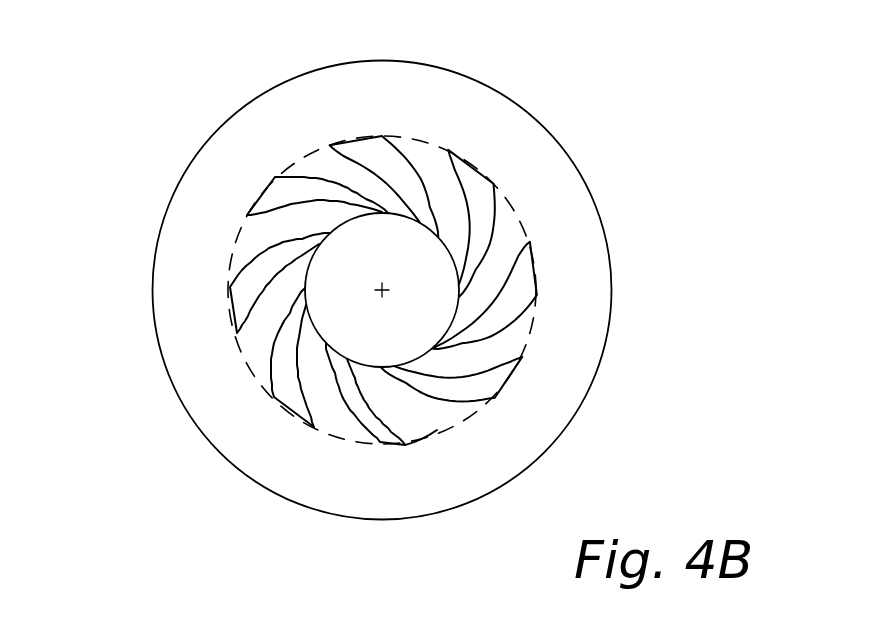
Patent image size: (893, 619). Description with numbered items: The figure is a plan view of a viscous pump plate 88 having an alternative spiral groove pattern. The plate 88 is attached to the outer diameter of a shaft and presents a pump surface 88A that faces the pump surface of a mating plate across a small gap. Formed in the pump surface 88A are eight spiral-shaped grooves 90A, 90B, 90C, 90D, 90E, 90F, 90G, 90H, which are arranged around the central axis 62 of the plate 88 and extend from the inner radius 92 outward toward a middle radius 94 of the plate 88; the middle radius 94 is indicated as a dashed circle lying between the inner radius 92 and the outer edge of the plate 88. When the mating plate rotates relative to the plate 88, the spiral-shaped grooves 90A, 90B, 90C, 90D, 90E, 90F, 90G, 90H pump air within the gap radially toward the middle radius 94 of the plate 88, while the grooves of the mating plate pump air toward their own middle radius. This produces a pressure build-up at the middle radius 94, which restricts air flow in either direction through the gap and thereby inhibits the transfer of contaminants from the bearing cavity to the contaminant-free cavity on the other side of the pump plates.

The plate 88 is at (523, 67).
The pump surface 88A is at (418, 78).
The spiral-shaped groove 90A is at (475, 180).
The spiral-shaped groove 90B is at (372, 142).
The spiral-shaped groove 90C is at (277, 195).
The spiral-shaped groove 90D is at (232, 303).
The spiral-shaped groove 90E is at (292, 408).
The spiral-shaped groove 90F is at (403, 442).
The spiral-shaped groove 90G is at (483, 383).
The spiral-shaped groove 90H is at (522, 273).
The middle radius 94 is at (517, 212).
The central axis 62 is at (380, 289).
The inner radius 92 is at (455, 310).